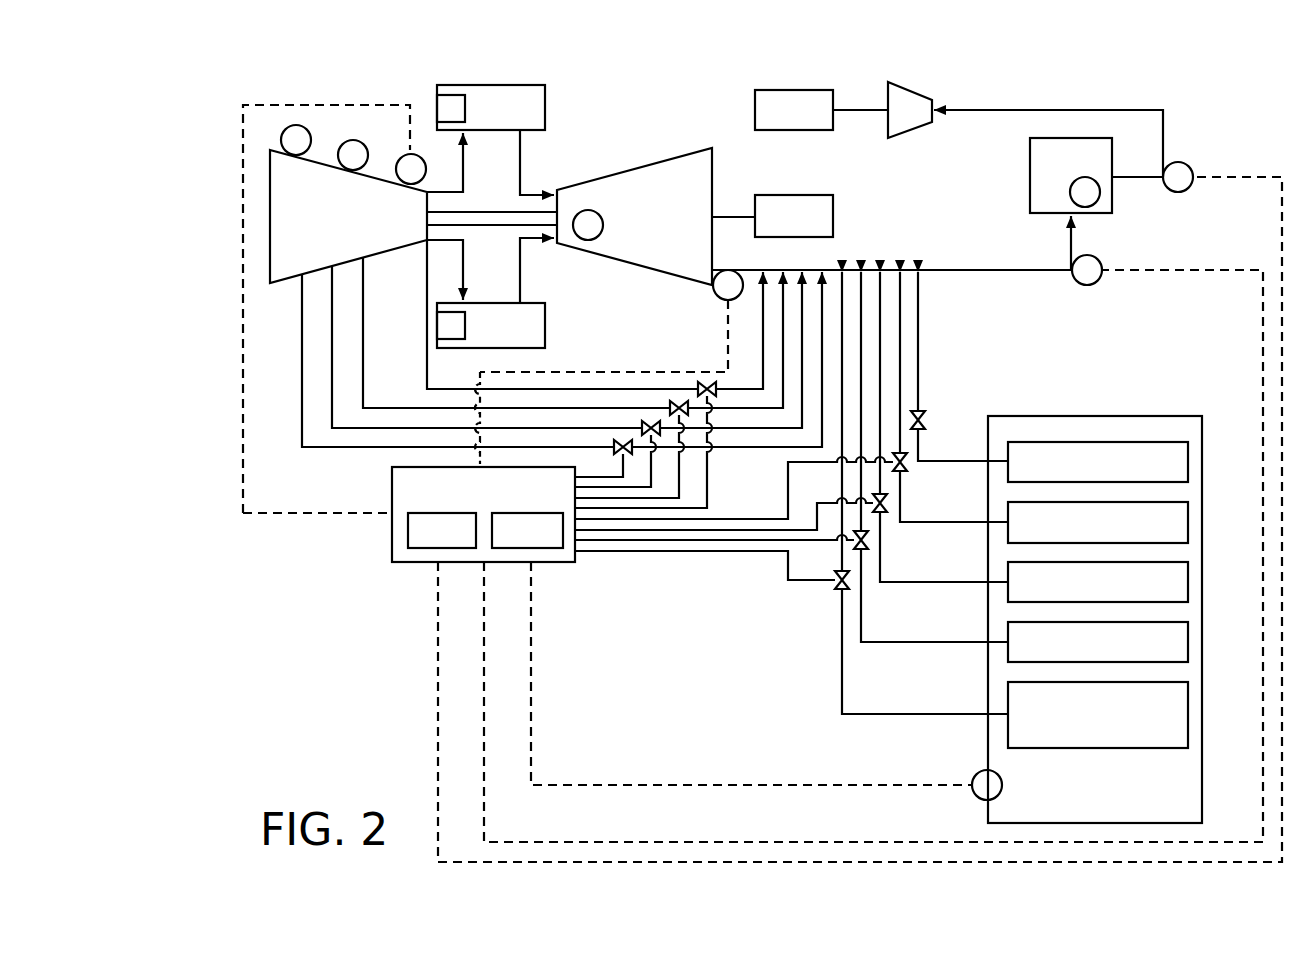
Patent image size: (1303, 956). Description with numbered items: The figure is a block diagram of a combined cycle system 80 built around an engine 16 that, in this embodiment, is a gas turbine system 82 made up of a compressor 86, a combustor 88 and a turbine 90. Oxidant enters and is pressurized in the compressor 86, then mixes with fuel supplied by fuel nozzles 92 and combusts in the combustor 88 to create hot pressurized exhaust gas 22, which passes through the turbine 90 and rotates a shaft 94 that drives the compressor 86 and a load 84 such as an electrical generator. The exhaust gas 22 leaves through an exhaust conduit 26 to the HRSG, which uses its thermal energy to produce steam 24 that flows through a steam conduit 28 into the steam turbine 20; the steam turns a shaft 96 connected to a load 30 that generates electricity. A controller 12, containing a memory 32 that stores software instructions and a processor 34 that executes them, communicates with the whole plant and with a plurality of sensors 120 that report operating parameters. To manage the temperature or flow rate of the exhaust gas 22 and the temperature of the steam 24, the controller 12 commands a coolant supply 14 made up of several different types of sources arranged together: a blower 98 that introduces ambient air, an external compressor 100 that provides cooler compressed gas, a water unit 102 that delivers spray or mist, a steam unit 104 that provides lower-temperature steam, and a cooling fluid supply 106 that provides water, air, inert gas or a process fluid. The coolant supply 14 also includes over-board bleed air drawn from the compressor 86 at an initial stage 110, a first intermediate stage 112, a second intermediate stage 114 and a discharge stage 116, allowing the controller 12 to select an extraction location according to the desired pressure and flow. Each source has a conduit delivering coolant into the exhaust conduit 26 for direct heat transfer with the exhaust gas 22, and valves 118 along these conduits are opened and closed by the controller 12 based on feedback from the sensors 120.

The controller 12 is at (415, 565).
The coolant supply 14 is at (352, 465).
The engine 16 is at (690, 108).
The steam turbine 20 is at (912, 84).
The exhaust gas 22 is at (750, 268).
The steam 24 is at (1165, 140).
The exhaust conduit 26 is at (980, 272).
The steam conduit 28 is at (1165, 118).
The load 30 is at (815, 132).
The memory 32 is at (552, 548).
The processor 34 is at (408, 535).
The combined cycle system 80 is at (648, 93).
The gas turbine system 82 is at (575, 153).
The load 84 is at (835, 217).
The compressor 86 is at (270, 180).
The combustor 88 is at (532, 85).
The turbine 90 is at (672, 153).
The fuel nozzles 92 is at (437, 102).
The shaft 94 is at (504, 210).
The shaft 96 is at (873, 112).
The blower 98 is at (1190, 462).
The external compressor 100 is at (1190, 522).
The water unit 102 is at (1190, 582).
The steam unit 104 is at (1190, 642).
The cooling fluid supply 106 is at (1190, 714).
The initial stage 110 is at (302, 278).
The first intermediate stage 112 is at (332, 268).
The second intermediate stage 114 is at (363, 258).
The discharge stage 116 is at (427, 250).
The valves 118 is at (623, 440).
The sensors 120 is at (350, 141).